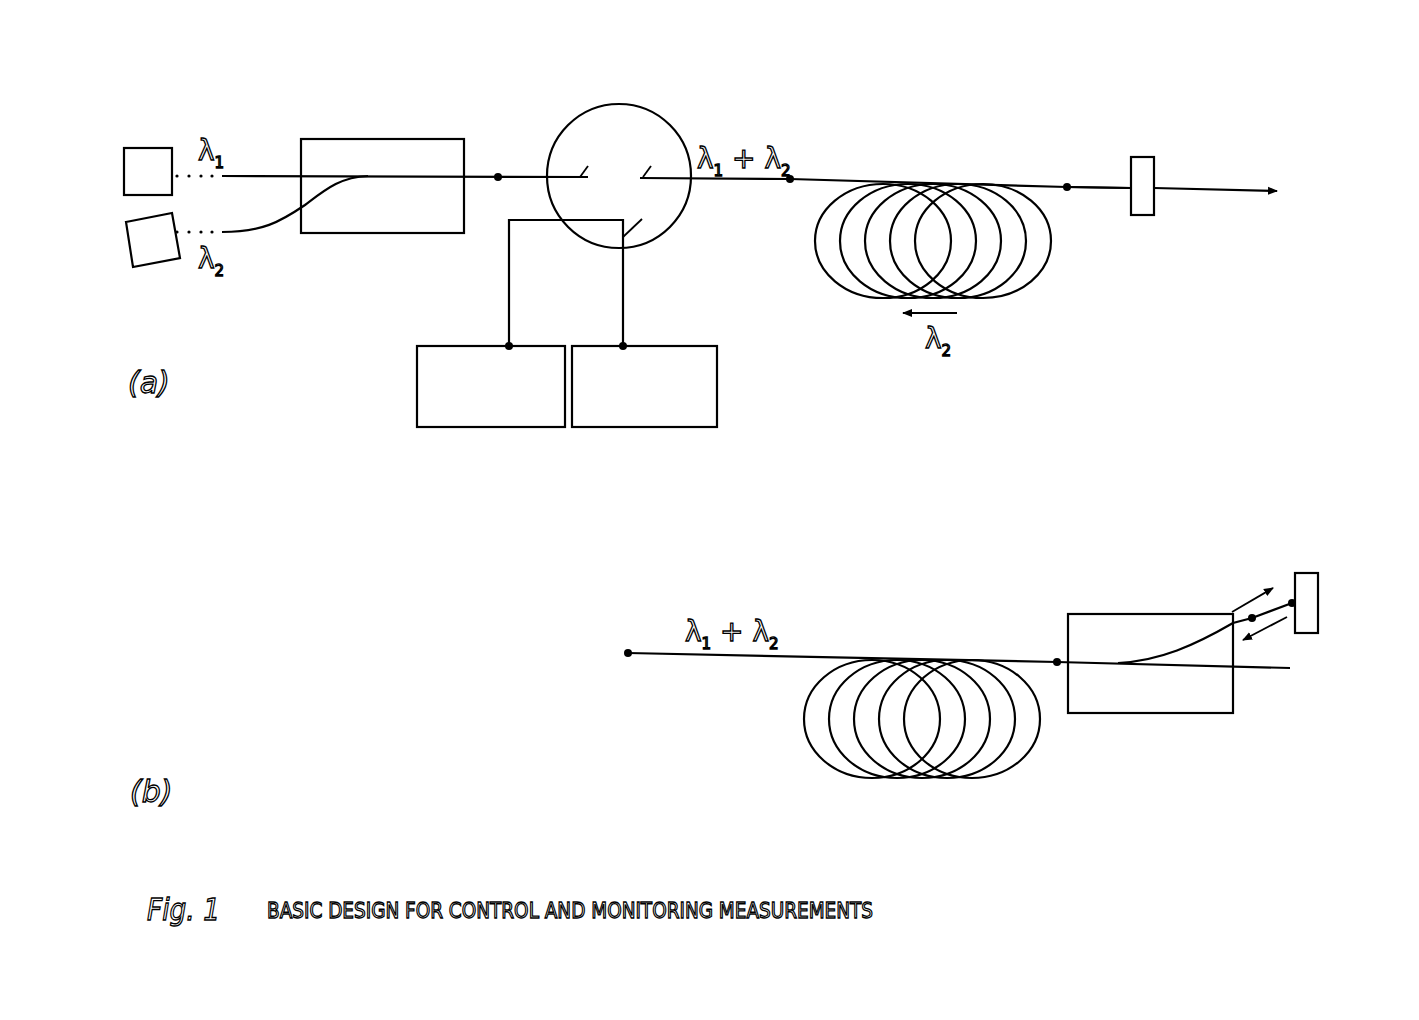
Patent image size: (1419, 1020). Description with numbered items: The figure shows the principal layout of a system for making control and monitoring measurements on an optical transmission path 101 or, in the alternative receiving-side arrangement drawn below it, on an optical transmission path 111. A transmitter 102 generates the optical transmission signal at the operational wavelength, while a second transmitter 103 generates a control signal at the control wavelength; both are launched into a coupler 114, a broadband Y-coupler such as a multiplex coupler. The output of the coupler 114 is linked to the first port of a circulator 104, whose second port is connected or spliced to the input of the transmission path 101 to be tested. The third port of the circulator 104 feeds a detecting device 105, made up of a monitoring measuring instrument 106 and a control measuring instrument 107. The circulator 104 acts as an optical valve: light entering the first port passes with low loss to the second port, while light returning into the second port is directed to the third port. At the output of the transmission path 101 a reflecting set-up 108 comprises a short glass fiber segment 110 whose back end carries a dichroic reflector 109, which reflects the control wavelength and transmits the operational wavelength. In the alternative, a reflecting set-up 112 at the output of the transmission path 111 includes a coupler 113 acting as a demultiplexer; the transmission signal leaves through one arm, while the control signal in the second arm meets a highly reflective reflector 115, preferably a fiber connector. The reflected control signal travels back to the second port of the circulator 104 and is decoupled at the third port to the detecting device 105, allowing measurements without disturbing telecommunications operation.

The optical transmission path 101 is at (810, 177).
The transmitter 102 is at (143, 142).
The second transmitter 103 is at (148, 270).
The circulator 104 is at (563, 133).
The detecting device 105 is at (570, 447).
The monitoring measuring instrument 106 is at (458, 427).
The control measuring instrument 107 is at (683, 427).
The reflecting set-up 108 is at (1127, 232).
The dichroic reflector 109 is at (1160, 202).
The glass fiber segment 110 is at (1095, 183).
The optical transmission path 111 is at (802, 657).
The reflecting set-up 112 is at (1095, 600).
The coupler 113 is at (1140, 713).
The coupler 114 is at (313, 137).
The reflector 115 is at (1320, 597).